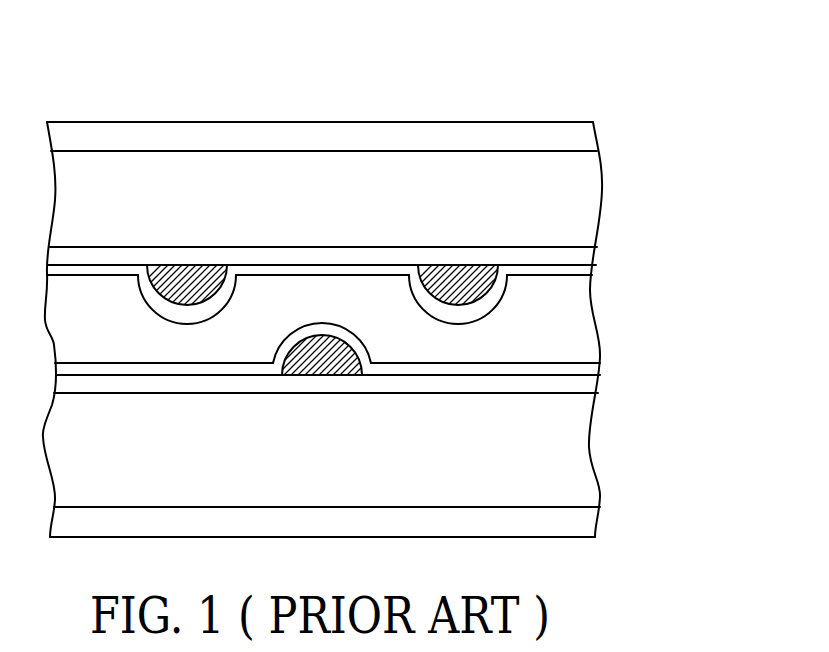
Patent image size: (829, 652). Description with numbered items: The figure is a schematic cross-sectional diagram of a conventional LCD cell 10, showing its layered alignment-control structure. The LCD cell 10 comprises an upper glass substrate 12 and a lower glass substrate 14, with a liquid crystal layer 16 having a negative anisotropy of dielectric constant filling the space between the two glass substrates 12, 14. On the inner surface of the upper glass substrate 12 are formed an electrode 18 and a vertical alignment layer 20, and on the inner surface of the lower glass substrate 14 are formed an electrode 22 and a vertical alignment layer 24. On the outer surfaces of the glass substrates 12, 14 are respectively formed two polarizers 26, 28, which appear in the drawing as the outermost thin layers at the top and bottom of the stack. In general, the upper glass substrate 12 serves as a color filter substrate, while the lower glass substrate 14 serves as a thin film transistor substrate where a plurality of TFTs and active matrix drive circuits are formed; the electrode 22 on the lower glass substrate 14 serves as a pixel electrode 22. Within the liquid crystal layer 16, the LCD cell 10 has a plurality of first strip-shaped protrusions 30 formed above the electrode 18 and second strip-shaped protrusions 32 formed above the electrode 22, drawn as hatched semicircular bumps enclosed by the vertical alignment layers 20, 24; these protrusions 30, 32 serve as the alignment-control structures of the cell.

The LCD cell 10 is at (572, 72).
The upper glass substrate 12 is at (570, 215).
The lower glass substrate 14 is at (570, 455).
The liquid crystal layer 16 is at (570, 325).
The electrode 18 is at (570, 255).
The vertical alignment layer 20 is at (578, 270).
The electrode 22 is at (590, 387).
The vertical alignment layer 24 is at (570, 368).
The polarizer 26 is at (570, 140).
The polarizer 28 is at (570, 523).
The first strip-shaped protrusions 30 is at (190, 278).
The second strip-shaped protrusions 32 is at (323, 380).